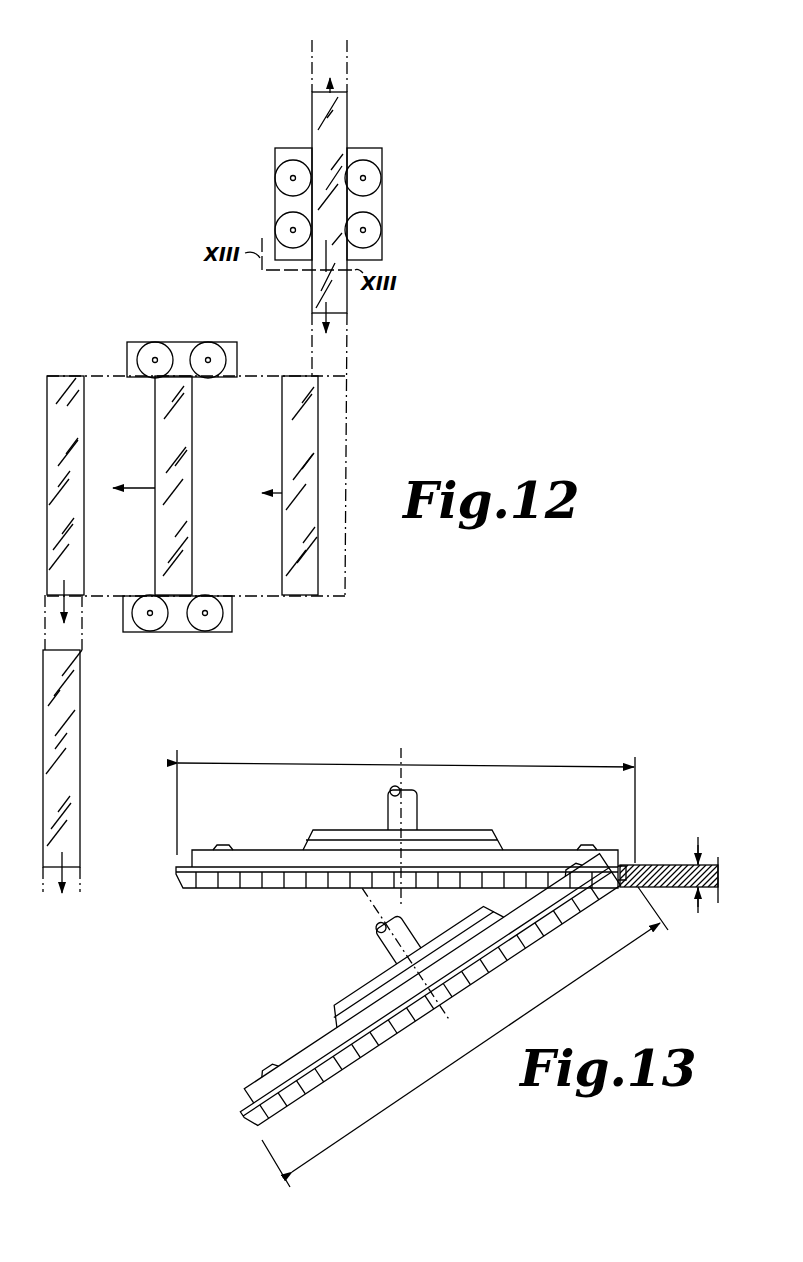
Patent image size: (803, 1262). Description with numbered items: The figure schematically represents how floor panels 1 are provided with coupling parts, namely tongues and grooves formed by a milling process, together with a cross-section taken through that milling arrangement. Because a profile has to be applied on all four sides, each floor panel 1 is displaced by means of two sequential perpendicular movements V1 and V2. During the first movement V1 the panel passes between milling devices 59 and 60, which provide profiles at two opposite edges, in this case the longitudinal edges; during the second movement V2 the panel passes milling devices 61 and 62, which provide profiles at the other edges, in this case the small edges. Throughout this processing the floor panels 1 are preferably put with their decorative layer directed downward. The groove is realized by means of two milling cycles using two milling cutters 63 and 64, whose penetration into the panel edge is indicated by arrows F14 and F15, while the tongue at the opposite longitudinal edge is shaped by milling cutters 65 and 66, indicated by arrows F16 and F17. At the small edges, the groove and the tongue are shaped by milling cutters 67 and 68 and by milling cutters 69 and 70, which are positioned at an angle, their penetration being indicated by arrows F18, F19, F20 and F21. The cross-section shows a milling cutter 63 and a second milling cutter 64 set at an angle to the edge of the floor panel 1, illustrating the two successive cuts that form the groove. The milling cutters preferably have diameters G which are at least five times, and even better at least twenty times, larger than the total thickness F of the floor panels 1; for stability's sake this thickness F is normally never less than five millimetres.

In FIG. 12, the floor panel 1 is at (350, 101).
In FIG. 13, the floor panel 1 is at (655, 866).
In FIG. 12, the milling device 59 is at (282, 148).
In FIG. 12, the milling device 60 is at (370, 147).
In FIG. 12, the milling device 61 is at (180, 345).
In FIG. 12, the milling device 62 is at (177, 625).
In FIG. 12, the milling cutter 63 is at (283, 168).
In FIG. 13, the milling cutter 63 is at (255, 853).
In FIG. 12, the milling cutter 64 is at (282, 222).
In FIG. 13, the milling cutter 64 is at (312, 1063).
In FIG. 12, the milling cutter 65 is at (372, 168).
In FIG. 12, the milling cutter 66 is at (377, 222).
In FIG. 12, the milling cutter 67 is at (208, 350).
In FIG. 12, the milling cutter 68 is at (155, 350).
In FIG. 12, the milling cutter 69 is at (228, 622).
In FIG. 12, the milling cutter 70 is at (152, 623).
In FIG. 12, the arrow indicating milling cutter penetration F14 is at (276, 173).
In FIG. 12, the arrow indicating milling cutter penetration F15 is at (274, 225).
In FIG. 12, the arrow indicating milling cutter penetration F16 is at (388, 175).
In FIG. 12, the arrow indicating milling cutter penetration F17 is at (386, 232).
In FIG. 12, the arrow indicating milling cutter penetration F18 is at (234, 360).
In FIG. 12, the arrow indicating milling cutter penetration F19 is at (132, 360).
In FIG. 12, the arrow indicating milling cutter penetration F20 is at (210, 637).
In FIG. 12, the arrow indicating milling cutter penetration F21 is at (130, 627).
In FIG. 12, the first movement V1 is at (328, 307).
In FIG. 12, the second movement V2 is at (300, 493).
In FIG. 13, the diameter of milling cutter G is at (422, 968).
In FIG. 13, the total thickness of floor panel F is at (700, 845).